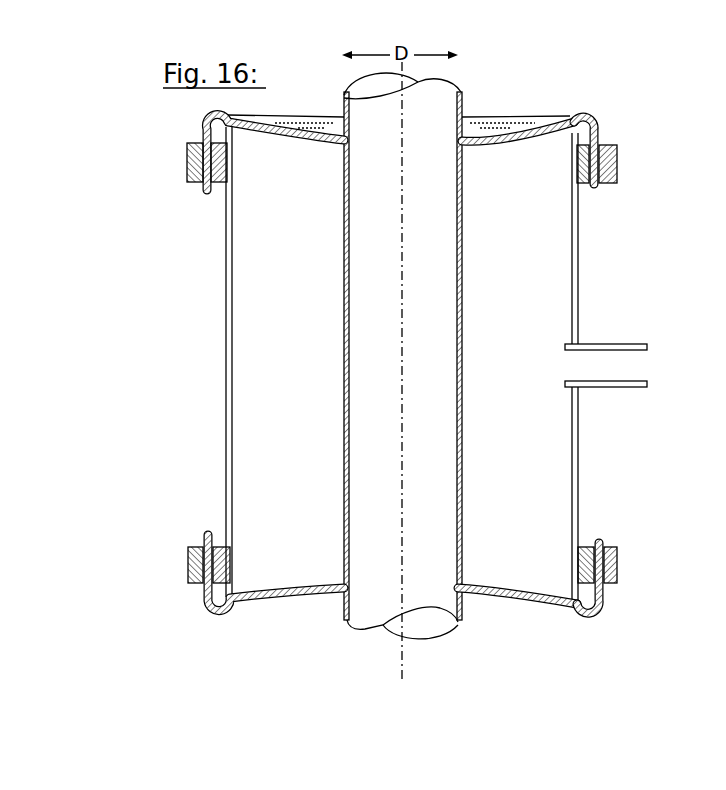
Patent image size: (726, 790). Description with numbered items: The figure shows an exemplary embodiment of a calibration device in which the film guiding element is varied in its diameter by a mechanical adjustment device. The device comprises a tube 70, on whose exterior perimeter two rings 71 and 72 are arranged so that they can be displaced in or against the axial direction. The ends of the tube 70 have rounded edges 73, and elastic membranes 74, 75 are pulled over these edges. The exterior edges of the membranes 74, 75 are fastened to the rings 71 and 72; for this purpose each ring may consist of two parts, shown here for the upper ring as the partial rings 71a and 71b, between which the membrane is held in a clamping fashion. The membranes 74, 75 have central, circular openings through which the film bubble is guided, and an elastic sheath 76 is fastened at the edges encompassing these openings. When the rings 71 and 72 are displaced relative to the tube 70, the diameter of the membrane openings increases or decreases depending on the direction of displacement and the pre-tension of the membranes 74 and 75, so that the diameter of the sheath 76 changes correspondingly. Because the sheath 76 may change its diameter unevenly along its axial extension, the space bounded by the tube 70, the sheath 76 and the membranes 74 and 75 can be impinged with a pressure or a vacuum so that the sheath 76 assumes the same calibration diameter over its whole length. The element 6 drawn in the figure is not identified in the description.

The tube 6 is at (347, 400).
The elastic sheath 76 is at (462, 348).
The tube 70 is at (579, 445).
The ring 71 is at (609, 190).
The partial ring 71a is at (585, 184).
The partial ring 71b is at (615, 167).
The ring 72 is at (623, 528).
The rounded edges 73 is at (570, 138).
The elastic membrane 74 is at (594, 123).
The elastic membrane 75 is at (593, 615).